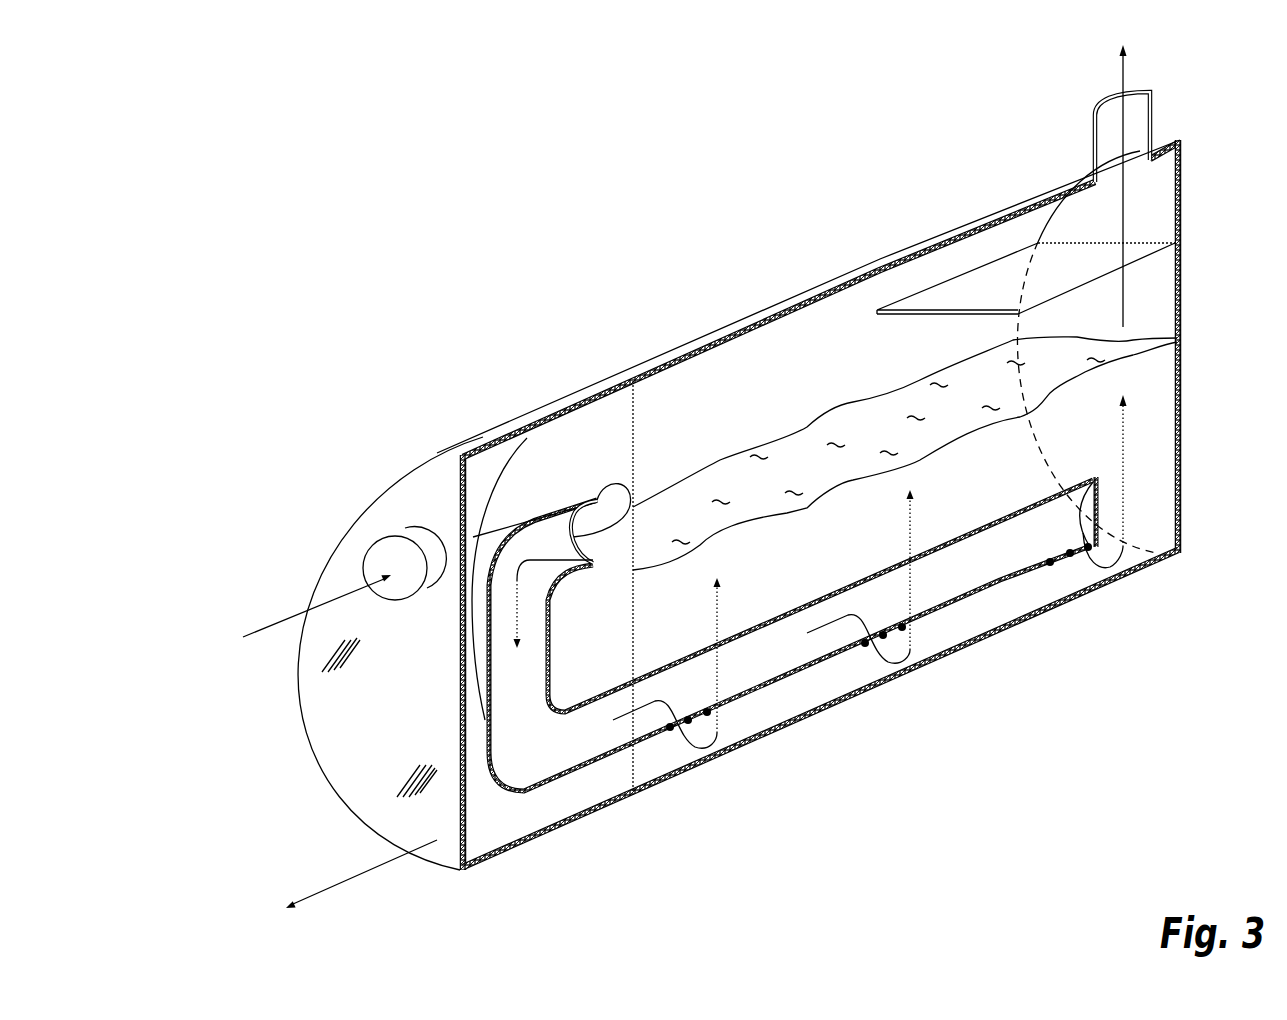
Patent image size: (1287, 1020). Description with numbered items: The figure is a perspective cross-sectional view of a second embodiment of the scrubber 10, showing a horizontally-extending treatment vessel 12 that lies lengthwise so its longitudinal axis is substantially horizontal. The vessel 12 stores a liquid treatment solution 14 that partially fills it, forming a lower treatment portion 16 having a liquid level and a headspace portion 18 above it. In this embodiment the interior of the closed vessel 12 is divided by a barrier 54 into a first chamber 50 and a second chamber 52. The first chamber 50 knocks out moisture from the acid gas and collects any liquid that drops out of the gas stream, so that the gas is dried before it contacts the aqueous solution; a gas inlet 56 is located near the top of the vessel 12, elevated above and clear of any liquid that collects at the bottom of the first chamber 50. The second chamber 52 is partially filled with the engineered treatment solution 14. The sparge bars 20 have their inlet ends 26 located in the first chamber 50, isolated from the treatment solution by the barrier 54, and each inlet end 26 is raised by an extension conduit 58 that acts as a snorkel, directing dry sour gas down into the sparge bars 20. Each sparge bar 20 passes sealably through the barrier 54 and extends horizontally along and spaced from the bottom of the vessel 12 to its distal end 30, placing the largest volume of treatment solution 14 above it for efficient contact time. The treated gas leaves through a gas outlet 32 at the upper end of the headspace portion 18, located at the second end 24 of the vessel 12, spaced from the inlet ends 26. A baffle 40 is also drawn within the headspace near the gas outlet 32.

The scrubber 10 is at (600, 255).
The treatment vessel 12 is at (485, 435).
The liquid treatment solution 14 is at (1050, 370).
The lower treatment portion 16 is at (822, 575).
The headspace portion 18 is at (770, 404).
The sparge bar 20 is at (962, 592).
The second end 24 is at (373, 518).
The inlet end 26 is at (612, 478).
The distal end 30 is at (1082, 500).
The gas outlet 32 is at (1103, 133).
The baffle 40 is at (992, 290).
The first chamber 50 is at (505, 823).
The second chamber 52 is at (790, 700).
The barrier 54 is at (615, 432).
The gas inlet 56 is at (383, 560).
The extension conduit 58 is at (505, 722).